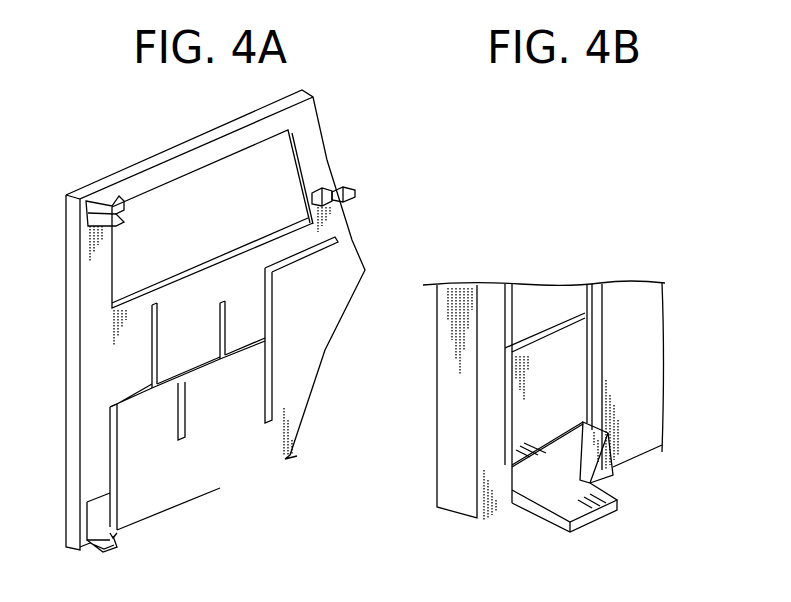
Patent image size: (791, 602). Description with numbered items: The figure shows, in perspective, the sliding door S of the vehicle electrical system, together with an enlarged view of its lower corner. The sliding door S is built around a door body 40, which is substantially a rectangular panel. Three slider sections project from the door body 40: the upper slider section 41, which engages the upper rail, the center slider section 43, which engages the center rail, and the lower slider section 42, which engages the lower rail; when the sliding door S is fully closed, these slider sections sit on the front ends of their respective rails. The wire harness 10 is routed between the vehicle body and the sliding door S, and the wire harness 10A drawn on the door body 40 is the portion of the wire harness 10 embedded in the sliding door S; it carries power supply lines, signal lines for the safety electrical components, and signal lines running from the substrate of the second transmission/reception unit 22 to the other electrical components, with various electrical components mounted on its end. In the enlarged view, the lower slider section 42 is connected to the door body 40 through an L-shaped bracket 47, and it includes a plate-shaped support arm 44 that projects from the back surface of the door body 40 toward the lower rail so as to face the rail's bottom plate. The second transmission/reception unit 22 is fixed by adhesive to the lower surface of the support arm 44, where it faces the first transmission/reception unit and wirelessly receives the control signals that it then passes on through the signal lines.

In FIG. 4A, the sliding door S is at (326, 141).
In FIG. 4B, the sliding door S is at (666, 342).
In FIG. 4A, the door body 40 is at (318, 163).
In FIG. 4B, the door body 40 is at (645, 390).
In FIG. 4A, the upper slider section 41 is at (103, 208).
In FIG. 4A, the lower slider section 42 is at (97, 542).
In FIG. 4B, the lower slider section 42 is at (536, 497).
In FIG. 4A, the center slider section 43 is at (357, 192).
In FIG. 4A, the wire harness 10 is at (212, 388).
In FIG. 4A, the wire harness 10A is at (122, 513).
In FIG. 4B, the L-shaped bracket 47 is at (528, 400).
In FIG. 4B, the support arm 44 is at (548, 492).
In FIG. 4B, the second transmission/reception unit 22 is at (605, 470).